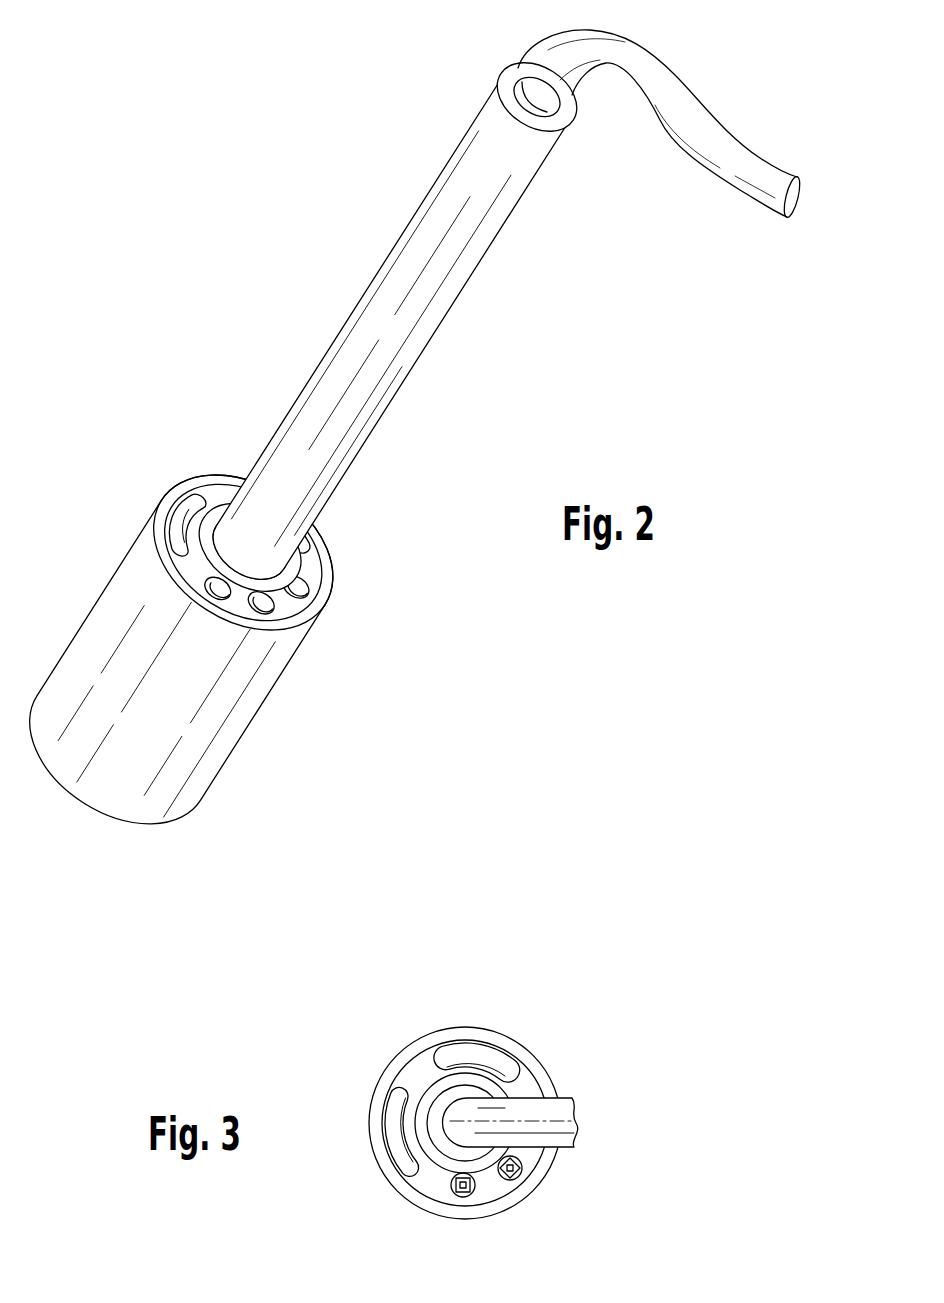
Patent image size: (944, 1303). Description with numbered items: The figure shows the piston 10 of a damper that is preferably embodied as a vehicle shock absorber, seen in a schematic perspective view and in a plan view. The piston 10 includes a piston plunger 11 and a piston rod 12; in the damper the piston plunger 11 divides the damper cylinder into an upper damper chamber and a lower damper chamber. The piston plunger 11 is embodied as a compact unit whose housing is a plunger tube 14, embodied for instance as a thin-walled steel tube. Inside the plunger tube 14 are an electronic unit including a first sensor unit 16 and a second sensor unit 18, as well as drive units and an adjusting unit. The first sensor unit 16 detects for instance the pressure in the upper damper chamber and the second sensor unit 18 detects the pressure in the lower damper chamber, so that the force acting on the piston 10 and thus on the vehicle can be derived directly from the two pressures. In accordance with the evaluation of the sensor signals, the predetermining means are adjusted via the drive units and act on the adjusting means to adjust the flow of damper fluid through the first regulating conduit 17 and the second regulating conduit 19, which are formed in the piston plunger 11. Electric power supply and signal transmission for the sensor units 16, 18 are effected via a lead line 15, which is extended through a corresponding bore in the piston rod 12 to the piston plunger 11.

In FIG. 2, the piston 10 is at (190, 237).
In FIG. 2, the piston plunger 11 is at (99, 480).
In FIG. 2, the piston rod 12 is at (367, 335).
In FIG. 3, the piston rod 12 is at (440, 1100).
In FIG. 2, the plunger tube 14 is at (130, 620).
In FIG. 3, the plunger tube 14 is at (407, 1190).
In FIG. 2, the lead line 15 is at (722, 150).
In FIG. 3, the lead line 15 is at (562, 1127).
In FIG. 3, the first sensor unit 16 is at (523, 1176).
In FIG. 2, the first regulating conduit 17 is at (183, 517).
In FIG. 3, the first regulating conduit 17 is at (392, 1127).
In FIG. 3, the second sensor unit 18 is at (474, 1191).
In FIG. 2, the second regulating conduit 19 is at (308, 540).
In FIG. 3, the second regulating conduit 19 is at (467, 1045).